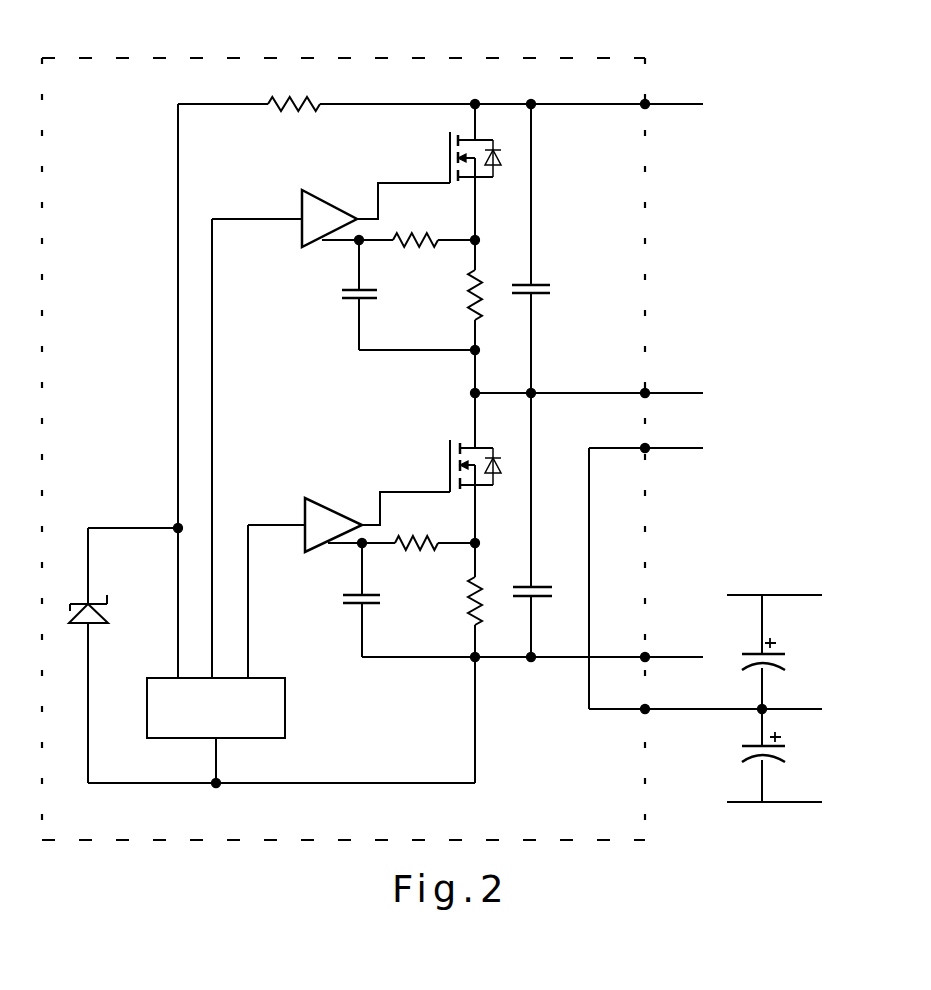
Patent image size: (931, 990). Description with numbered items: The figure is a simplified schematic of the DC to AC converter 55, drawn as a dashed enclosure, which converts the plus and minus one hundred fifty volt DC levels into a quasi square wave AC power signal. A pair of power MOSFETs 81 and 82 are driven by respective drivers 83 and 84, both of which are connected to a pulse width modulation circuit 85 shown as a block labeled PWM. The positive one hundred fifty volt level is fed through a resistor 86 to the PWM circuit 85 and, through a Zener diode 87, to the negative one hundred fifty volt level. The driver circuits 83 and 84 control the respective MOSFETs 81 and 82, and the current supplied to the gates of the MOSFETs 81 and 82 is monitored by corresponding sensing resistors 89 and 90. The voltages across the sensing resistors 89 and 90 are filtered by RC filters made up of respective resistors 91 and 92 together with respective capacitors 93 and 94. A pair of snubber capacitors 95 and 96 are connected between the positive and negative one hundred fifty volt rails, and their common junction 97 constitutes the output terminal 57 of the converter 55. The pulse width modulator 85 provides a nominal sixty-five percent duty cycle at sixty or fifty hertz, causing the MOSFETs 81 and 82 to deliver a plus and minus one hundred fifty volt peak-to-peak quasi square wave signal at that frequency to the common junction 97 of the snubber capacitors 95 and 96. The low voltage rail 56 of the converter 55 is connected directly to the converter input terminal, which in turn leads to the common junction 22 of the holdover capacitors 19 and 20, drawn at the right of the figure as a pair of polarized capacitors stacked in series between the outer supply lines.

The DC to AC converter 55 is at (260, 58).
The resistor 86 is at (293, 112).
The power MOSFET 81 is at (476, 166).
The driver 83 is at (300, 234).
The resistor 91 is at (420, 246).
The sensing resistor 89 is at (473, 310).
The capacitor 93 is at (344, 300).
The snubber capacitor 95 is at (537, 283).
The common junction 97 is at (537, 388).
The output terminal 57 is at (672, 392).
The low voltage rail 56 is at (670, 452).
The driver 84 is at (318, 500).
The power MOSFET 82 is at (476, 476).
The resistor 92 is at (418, 552).
The sensing resistor 90 is at (480, 612).
The capacitor 94 is at (355, 607).
The snubber capacitor 96 is at (543, 587).
The Zener diode 87 is at (108, 608).
The pulse width modulation circuit 85 is at (287, 703).
The holdover capacitor 20 is at (780, 665).
The holdover capacitor 19 is at (782, 760).
The common junction 22 is at (758, 713).